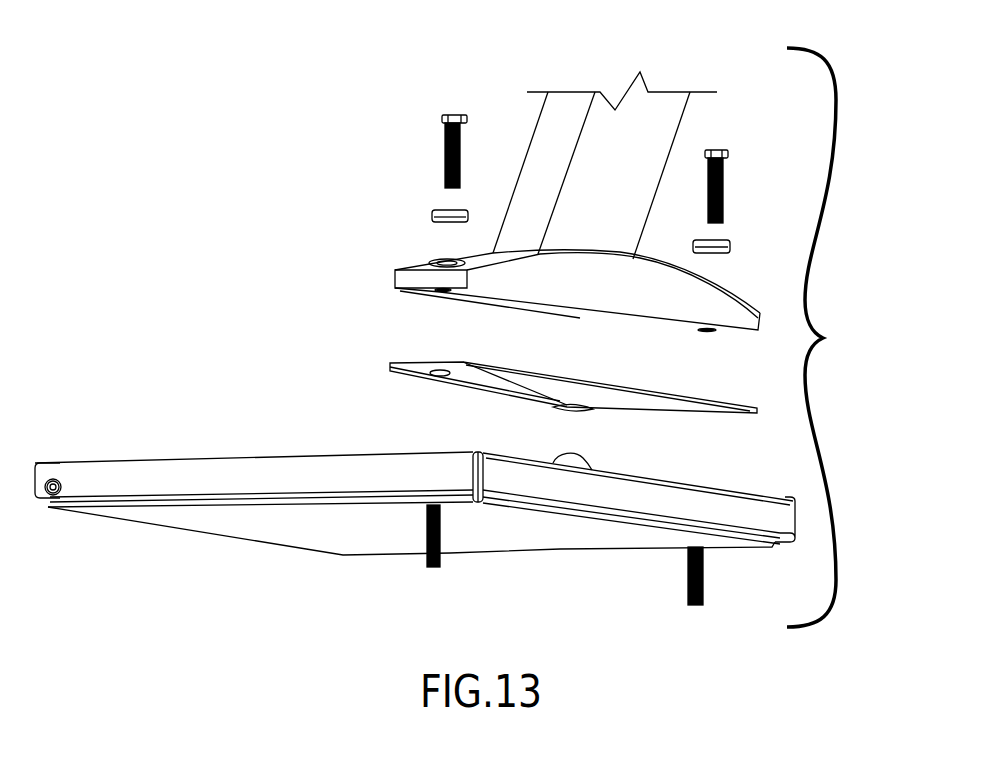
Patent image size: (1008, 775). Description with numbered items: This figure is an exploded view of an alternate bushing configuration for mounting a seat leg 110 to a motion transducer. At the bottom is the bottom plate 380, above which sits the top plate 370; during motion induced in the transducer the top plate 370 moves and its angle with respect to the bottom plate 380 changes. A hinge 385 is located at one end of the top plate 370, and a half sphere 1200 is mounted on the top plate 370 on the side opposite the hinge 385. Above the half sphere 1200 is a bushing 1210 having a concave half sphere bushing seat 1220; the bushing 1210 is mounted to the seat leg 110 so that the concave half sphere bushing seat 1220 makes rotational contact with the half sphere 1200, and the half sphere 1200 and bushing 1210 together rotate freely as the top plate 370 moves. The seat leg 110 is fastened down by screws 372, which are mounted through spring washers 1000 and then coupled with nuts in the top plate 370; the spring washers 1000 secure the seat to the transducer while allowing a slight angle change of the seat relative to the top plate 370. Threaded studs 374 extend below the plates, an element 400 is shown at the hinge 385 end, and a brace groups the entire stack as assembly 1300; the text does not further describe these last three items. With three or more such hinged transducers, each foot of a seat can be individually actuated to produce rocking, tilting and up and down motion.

The seat leg 110 is at (498, 297).
The screws 372 is at (446, 116).
The spring washers 1000 is at (442, 212).
The bushing 1210 is at (585, 392).
The concave half sphere bushing seat 1220 is at (577, 410).
The top plate 370 is at (335, 465).
The half sphere 1200 is at (565, 462).
The hinge 385 is at (55, 480).
The grommet 400 is at (61, 486).
The bottom plate 380 is at (293, 527).
The stud 374 is at (425, 540).
The assembly 1300 is at (831, 337).